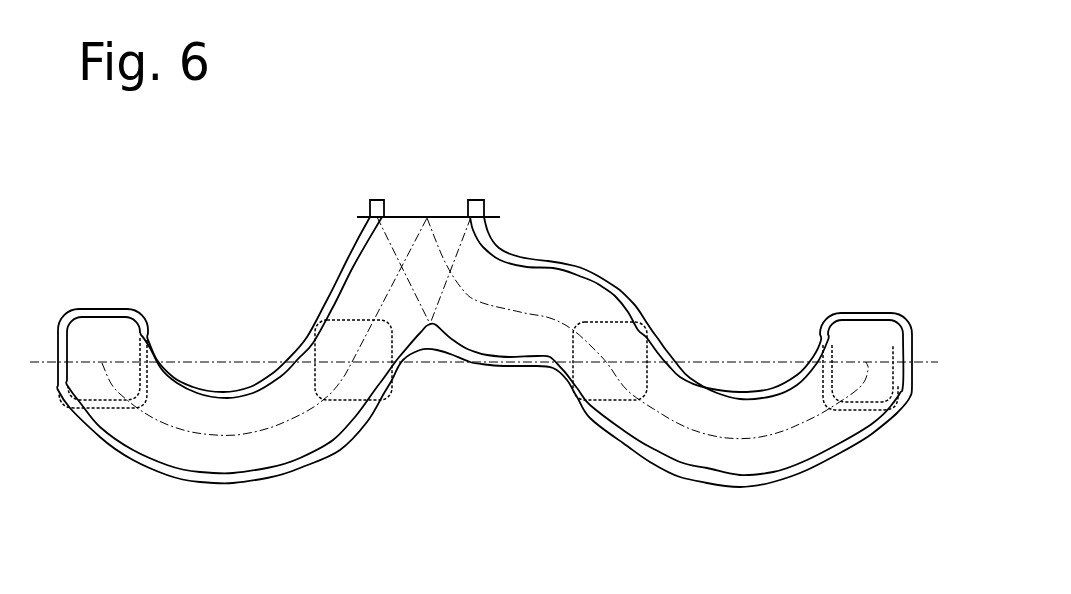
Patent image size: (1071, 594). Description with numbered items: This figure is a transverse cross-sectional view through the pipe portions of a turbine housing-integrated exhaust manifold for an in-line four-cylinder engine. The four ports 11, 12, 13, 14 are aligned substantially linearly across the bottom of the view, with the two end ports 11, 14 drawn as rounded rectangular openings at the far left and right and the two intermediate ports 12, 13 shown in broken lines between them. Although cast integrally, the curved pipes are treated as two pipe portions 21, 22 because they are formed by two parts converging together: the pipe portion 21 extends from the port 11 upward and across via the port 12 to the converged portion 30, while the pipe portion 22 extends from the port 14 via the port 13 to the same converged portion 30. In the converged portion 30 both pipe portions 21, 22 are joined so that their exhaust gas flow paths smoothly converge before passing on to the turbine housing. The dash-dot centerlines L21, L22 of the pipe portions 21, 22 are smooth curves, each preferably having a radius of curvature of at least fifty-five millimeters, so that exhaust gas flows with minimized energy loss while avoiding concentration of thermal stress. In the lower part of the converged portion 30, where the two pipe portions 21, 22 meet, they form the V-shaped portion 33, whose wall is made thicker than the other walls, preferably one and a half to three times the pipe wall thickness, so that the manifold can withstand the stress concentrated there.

The port 11 is at (108, 334).
The port 12 is at (368, 370).
The port 13 is at (603, 383).
The port 14 is at (872, 338).
The pipe portion 21 is at (231, 396).
The pipe portion 22 is at (738, 396).
The converged portion 30 is at (488, 240).
The V-shaped portion 33 is at (435, 347).
The centerline of pipe portion 21 L21 is at (270, 430).
The centerline of pipe portion 22 L22 is at (760, 437).